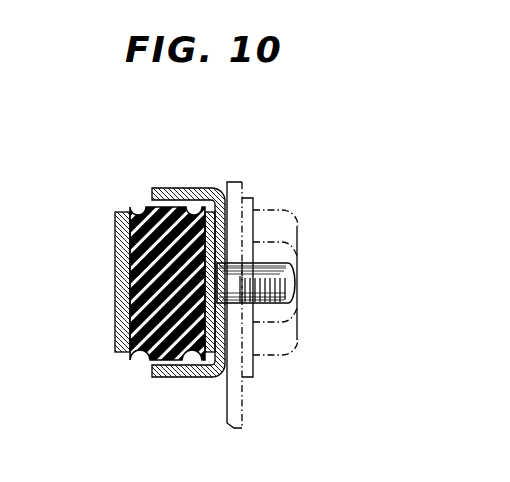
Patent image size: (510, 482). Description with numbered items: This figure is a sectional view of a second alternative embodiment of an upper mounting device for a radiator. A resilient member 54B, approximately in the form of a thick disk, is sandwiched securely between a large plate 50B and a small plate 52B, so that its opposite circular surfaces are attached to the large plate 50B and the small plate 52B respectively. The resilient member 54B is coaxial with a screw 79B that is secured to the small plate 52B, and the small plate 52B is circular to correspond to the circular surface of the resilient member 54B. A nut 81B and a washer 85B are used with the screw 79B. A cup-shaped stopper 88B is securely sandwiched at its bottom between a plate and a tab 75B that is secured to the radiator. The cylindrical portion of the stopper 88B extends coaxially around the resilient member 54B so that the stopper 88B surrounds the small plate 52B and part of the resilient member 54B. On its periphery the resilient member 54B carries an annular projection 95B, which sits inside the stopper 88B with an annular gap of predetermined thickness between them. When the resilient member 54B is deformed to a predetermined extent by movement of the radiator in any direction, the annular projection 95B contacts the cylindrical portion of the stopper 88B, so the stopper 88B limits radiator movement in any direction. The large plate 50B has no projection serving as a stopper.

The large plate 50B is at (117, 265).
The resilient member 54B is at (140, 206).
The cup-shaped stopper 88B is at (192, 189).
The small plate 52B is at (228, 224).
The screw 79B is at (293, 275).
The nut 81B is at (280, 340).
The washer 85B is at (246, 368).
The annular projection 95B is at (155, 360).
The tab 75B is at (235, 397).